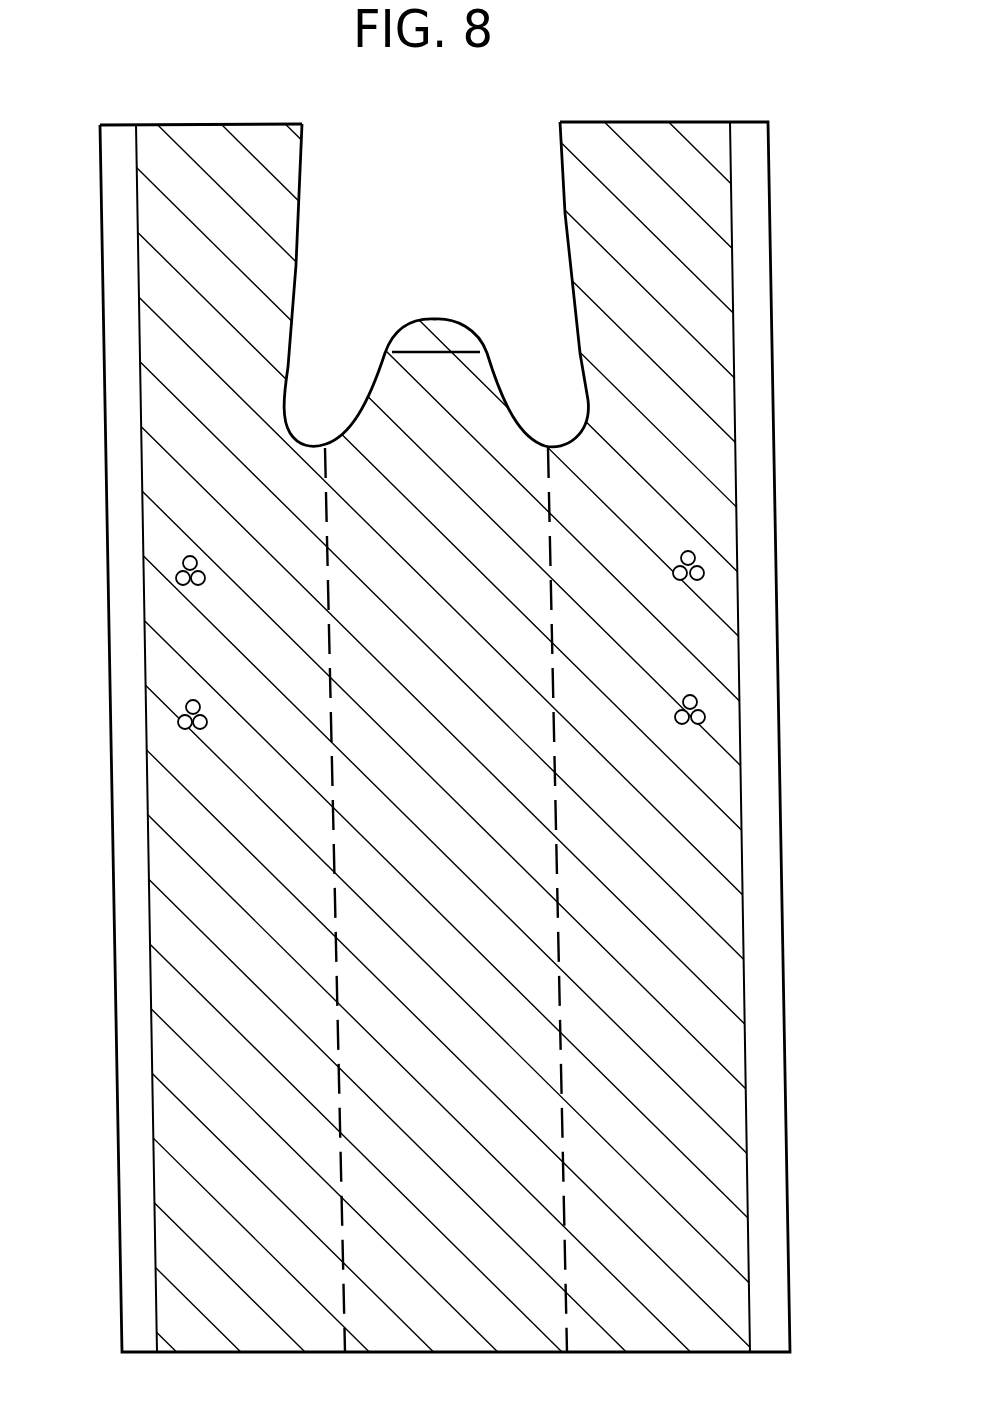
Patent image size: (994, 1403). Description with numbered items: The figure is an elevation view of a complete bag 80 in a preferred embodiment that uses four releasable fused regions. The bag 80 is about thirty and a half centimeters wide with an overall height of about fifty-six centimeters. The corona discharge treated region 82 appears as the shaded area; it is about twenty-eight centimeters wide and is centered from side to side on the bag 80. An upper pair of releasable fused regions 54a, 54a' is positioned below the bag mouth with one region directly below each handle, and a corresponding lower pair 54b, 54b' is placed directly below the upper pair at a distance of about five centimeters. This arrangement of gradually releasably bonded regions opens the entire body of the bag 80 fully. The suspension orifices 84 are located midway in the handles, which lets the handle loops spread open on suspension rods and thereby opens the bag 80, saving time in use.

The bag 80 is at (781, 947).
The corona discharge treated region 82 is at (732, 213).
The suspension orifices 84 is at (617, 300).
The releasable fused region 54a is at (123, 562).
The releasable fused region 54b is at (117, 715).
The releasable fused region 54a' is at (759, 553).
The releasable fused region 54b' is at (760, 708).